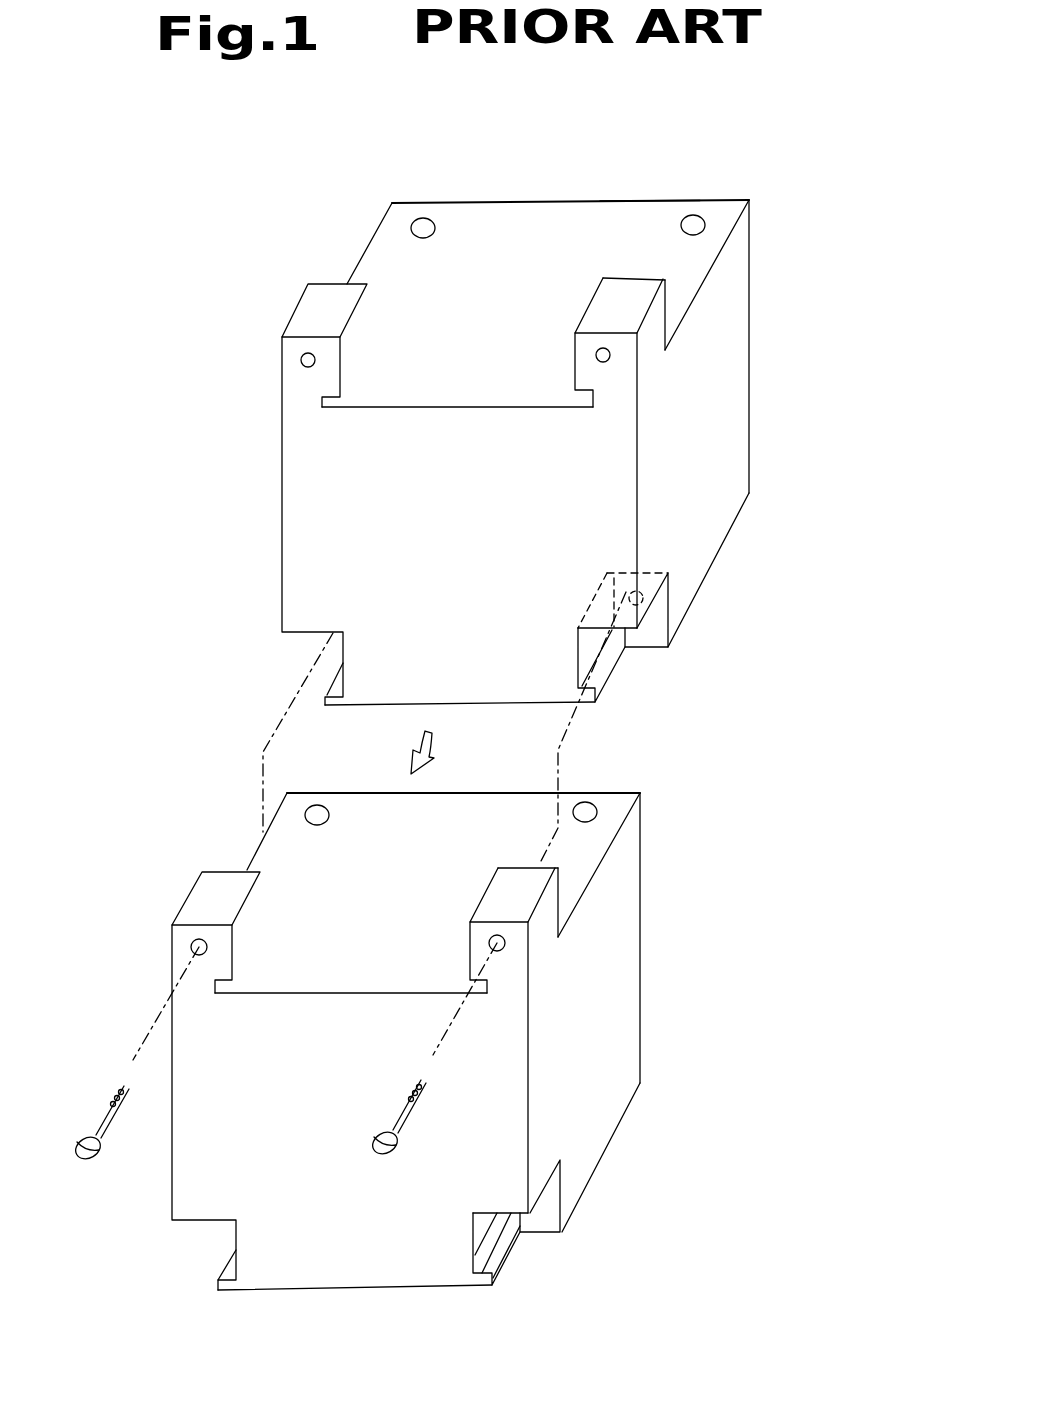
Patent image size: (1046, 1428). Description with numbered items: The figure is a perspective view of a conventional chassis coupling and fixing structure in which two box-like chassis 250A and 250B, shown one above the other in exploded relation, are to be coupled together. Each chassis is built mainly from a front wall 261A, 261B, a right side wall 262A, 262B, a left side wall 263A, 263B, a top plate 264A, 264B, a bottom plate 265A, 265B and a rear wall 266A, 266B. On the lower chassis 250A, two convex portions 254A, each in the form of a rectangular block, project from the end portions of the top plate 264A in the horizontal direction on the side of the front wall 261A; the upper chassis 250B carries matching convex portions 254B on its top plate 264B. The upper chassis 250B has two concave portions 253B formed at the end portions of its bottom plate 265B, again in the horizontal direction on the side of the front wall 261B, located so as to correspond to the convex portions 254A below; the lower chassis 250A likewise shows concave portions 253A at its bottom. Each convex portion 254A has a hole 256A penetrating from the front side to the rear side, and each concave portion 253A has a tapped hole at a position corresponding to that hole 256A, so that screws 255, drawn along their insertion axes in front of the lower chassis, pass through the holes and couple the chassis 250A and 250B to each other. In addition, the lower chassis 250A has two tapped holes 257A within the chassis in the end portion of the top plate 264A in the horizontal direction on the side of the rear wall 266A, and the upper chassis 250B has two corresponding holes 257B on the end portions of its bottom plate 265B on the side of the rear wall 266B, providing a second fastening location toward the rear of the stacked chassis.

The chassis 250A is at (682, 933).
The chassis 250B is at (237, 558).
The concave portion 253A is at (213, 1243).
The concave portion 253B is at (675, 622).
The convex portion 254A is at (205, 898).
The convex portion 254B is at (308, 308).
The screw 255 is at (83, 1163).
The hole 256A is at (199, 947).
The tapped hole 257A is at (322, 813).
The hole 257B is at (423, 228).
The front wall 261A is at (350, 1262).
The front wall 261B is at (390, 680).
The right side wall 262A is at (580, 1030).
The right side wall 262B is at (703, 410).
The left side wall 263A is at (172, 957).
The left side wall 263B is at (281, 468).
The top plate 264A is at (472, 823).
The top plate 264B is at (525, 223).
The bottom plate 265A is at (598, 1168).
The bottom plate 265B is at (723, 548).
The rear wall 266A is at (588, 793).
The rear wall 266B is at (633, 200).